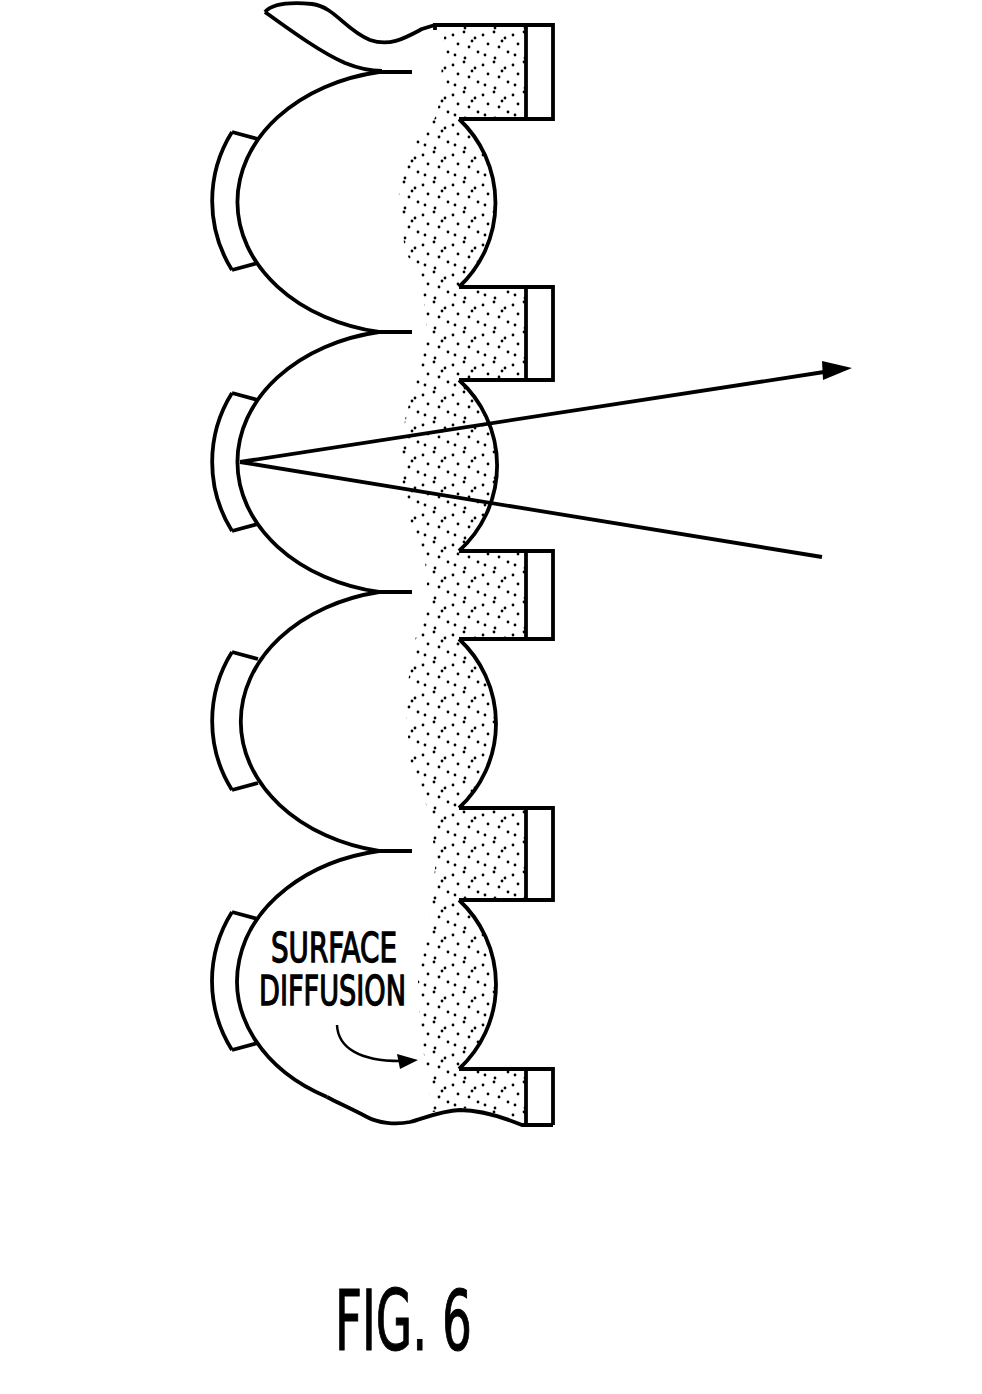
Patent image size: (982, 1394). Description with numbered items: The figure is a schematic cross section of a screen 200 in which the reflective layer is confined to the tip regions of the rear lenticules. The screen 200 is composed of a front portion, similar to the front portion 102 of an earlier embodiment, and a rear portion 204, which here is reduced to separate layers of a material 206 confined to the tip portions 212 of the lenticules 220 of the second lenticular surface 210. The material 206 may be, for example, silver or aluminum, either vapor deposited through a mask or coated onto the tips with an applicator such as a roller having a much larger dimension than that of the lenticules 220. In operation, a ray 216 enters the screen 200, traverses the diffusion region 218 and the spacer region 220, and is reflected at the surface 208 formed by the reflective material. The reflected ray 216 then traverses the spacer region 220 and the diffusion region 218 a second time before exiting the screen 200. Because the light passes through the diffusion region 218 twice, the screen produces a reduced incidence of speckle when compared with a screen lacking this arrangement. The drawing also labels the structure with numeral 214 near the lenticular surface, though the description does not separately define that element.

The front portion 102 is at (455, 1138).
The screen 200 is at (95, 607).
The rear portion 204 is at (210, 990).
The material 206 is at (216, 953).
The surface 208 is at (227, 918).
The second lenticular surface 210 is at (288, 882).
The tip portions 212 is at (262, 667).
The lens surface 214 is at (307, 628).
The ray 216 is at (777, 549).
The diffusion region 218 is at (467, 698).
The lenticules 220 is at (290, 370).